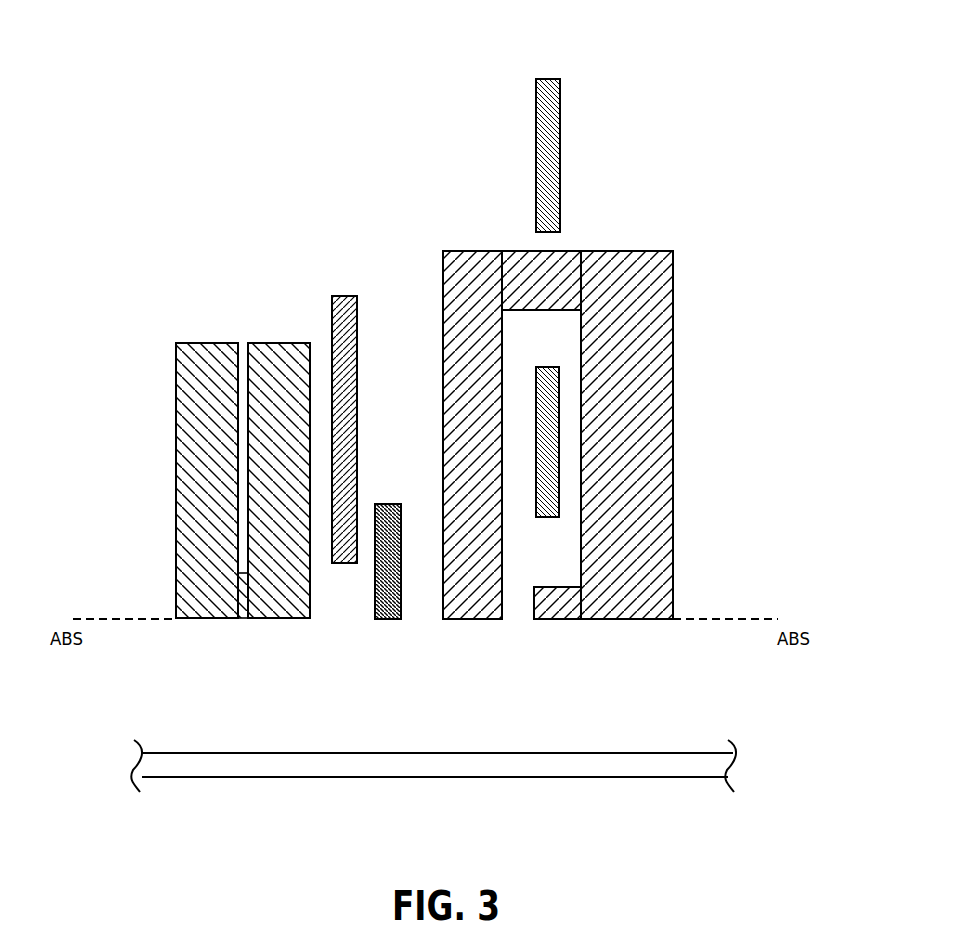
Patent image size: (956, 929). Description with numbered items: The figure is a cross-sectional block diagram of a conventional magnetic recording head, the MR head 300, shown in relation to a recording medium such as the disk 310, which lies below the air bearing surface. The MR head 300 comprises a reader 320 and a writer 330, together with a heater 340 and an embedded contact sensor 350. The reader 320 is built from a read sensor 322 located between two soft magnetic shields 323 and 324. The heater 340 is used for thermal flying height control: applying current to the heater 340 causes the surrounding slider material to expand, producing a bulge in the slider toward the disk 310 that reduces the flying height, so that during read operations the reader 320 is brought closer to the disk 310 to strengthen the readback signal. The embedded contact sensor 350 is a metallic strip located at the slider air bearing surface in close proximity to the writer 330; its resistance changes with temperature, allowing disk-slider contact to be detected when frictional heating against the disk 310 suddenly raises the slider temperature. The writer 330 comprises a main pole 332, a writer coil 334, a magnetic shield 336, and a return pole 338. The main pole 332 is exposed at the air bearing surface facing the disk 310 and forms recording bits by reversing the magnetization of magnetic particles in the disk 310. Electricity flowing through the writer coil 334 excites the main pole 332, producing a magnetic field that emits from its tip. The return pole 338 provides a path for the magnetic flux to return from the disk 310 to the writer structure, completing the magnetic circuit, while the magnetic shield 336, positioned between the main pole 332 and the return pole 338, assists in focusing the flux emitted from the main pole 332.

The MR head 300 is at (722, 148).
The disk 310 is at (718, 763).
The reader 320 is at (310, 290).
The read sensor 322 is at (243, 615).
The soft magnetic shield 323 is at (200, 470).
The soft magnetic shield 324 is at (298, 583).
The writer 330 is at (672, 75).
The main pole 332 is at (467, 262).
The writer coil 334 is at (553, 192).
The magnetic shield 336 is at (548, 610).
The return pole 338 is at (665, 330).
The heater 340 is at (343, 302).
The embedded contact sensor 350 is at (392, 512).